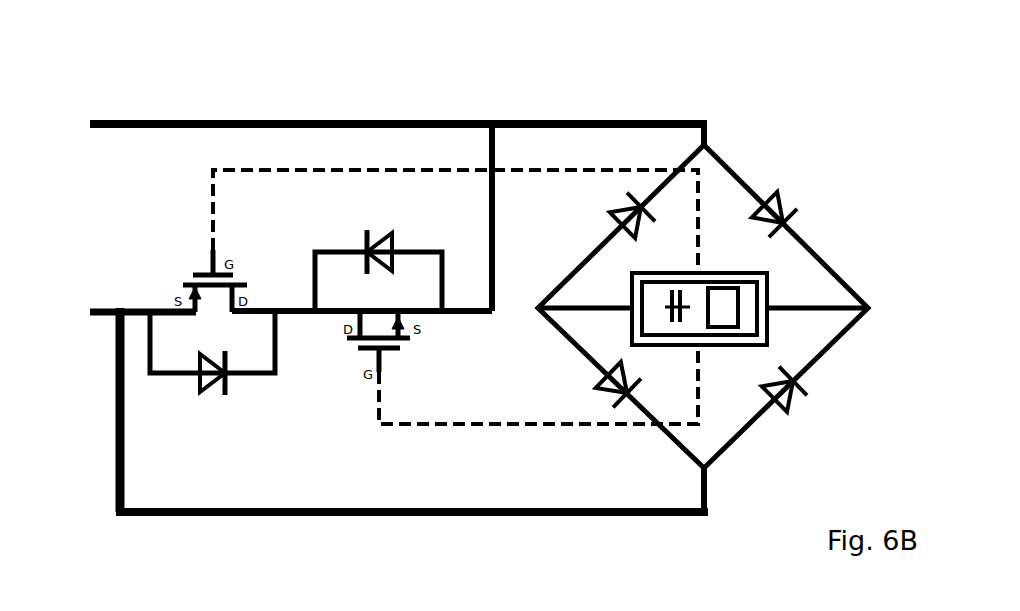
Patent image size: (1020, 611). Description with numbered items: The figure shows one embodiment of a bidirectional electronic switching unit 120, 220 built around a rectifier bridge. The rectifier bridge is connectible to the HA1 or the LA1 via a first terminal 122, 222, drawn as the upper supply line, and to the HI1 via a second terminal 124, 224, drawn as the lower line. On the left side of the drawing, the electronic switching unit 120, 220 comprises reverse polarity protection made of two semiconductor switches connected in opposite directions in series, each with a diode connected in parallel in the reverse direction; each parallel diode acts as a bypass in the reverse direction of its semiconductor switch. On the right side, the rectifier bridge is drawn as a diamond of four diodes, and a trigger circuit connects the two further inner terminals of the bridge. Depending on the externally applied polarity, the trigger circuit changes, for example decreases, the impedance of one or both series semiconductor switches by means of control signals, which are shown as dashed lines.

The first terminal 122 is at (368, 175).
The first terminal 222 is at (108, 121).
The second terminal 124 is at (361, 410).
The second terminal 224 is at (110, 318).
The bidirectional electronic switching unit 120 is at (703, 275).
The bidirectional electronic switching unit 220 is at (858, 61).